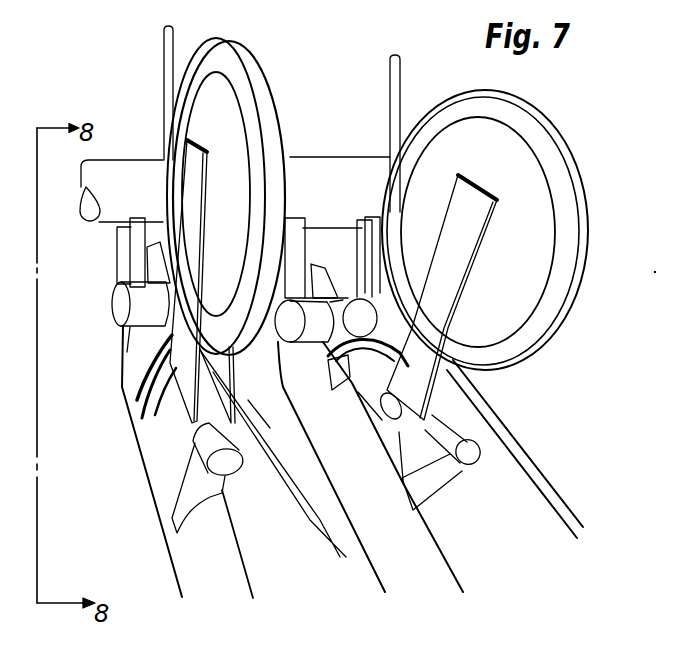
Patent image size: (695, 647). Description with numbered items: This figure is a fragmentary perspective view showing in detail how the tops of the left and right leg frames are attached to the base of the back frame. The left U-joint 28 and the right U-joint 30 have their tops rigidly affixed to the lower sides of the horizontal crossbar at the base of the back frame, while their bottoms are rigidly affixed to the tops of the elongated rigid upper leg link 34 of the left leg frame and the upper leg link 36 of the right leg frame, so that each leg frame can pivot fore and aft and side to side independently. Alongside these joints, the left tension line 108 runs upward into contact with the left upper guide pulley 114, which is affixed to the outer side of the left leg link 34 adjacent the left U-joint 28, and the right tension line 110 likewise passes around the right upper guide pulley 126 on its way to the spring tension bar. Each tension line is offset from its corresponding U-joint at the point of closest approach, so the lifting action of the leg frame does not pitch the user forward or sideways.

The left U-joint 28 is at (143, 308).
The right U-joint 30 is at (352, 286).
The upper leg link 34 is at (195, 558).
The upper leg link 36 is at (428, 550).
The left tension line 108 is at (173, 28).
The right tension line 110 is at (400, 62).
The left upper guide pulley 114 is at (197, 102).
The right upper guide pulley 126 is at (545, 210).